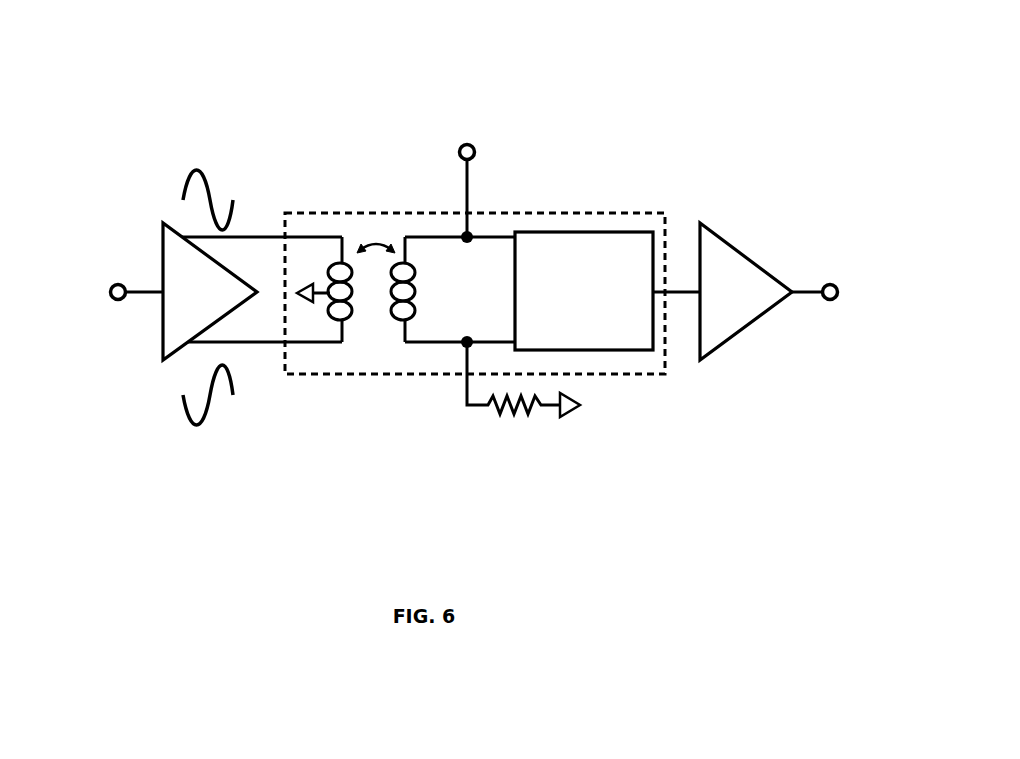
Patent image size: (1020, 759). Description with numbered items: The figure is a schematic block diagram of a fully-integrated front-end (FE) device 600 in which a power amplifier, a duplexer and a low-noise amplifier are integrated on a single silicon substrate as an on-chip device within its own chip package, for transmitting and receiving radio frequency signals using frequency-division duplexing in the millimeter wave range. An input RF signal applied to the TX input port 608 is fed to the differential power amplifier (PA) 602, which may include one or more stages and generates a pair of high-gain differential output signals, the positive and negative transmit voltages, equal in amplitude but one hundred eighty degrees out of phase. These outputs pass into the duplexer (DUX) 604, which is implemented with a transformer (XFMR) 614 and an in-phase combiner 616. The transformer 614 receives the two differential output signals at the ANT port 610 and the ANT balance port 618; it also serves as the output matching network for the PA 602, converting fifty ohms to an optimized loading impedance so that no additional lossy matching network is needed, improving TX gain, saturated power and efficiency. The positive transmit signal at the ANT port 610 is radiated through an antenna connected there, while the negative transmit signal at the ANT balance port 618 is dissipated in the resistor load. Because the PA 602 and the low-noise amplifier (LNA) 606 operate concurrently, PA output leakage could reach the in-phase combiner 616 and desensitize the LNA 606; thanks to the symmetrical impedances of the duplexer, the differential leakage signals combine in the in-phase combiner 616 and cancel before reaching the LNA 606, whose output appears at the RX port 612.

The front-end (FE) device 600 is at (706, 76).
The power amplifier (PA) 602 is at (167, 345).
The duplexer (DUX) 604 is at (400, 375).
The low-noise amplifier (LNA) 606 is at (733, 330).
The TX input port 608 is at (112, 299).
The ANT port 610 is at (461, 146).
The receive (RX) port 612 is at (834, 300).
The transformer (XFMR) 614 is at (382, 218).
The in-phase combiner 616 is at (588, 247).
The ANT balance port 618 is at (467, 336).